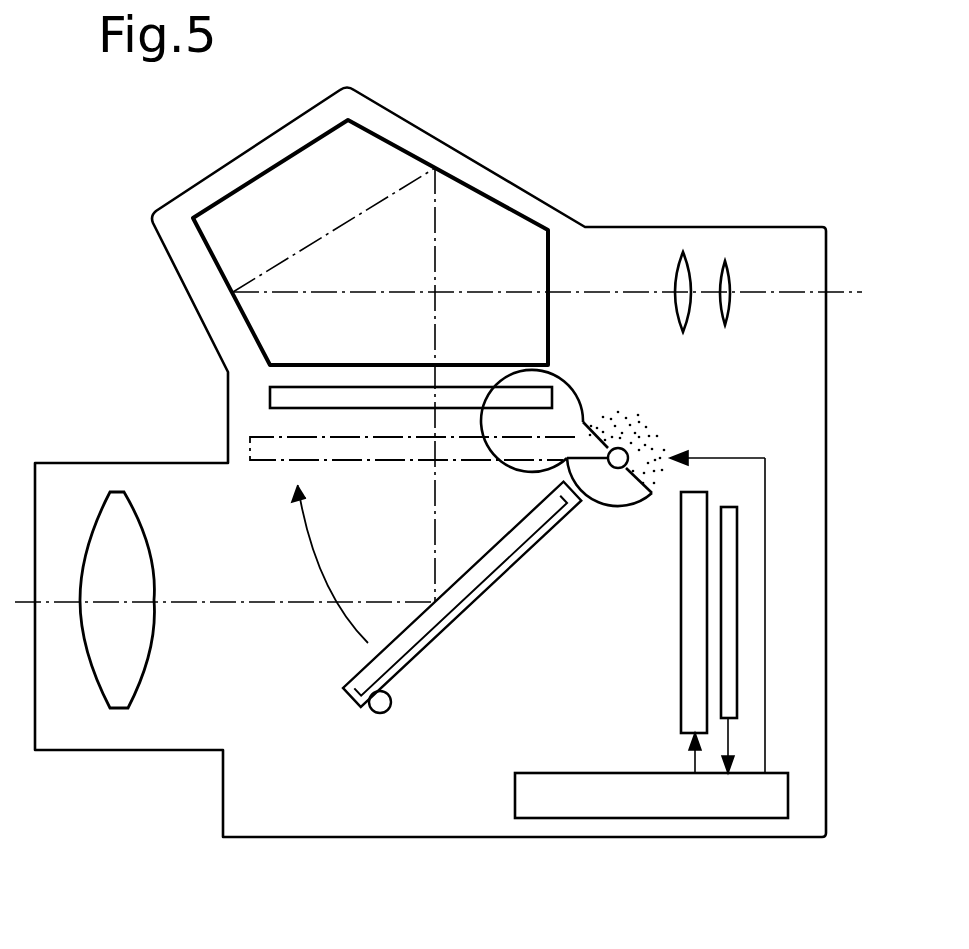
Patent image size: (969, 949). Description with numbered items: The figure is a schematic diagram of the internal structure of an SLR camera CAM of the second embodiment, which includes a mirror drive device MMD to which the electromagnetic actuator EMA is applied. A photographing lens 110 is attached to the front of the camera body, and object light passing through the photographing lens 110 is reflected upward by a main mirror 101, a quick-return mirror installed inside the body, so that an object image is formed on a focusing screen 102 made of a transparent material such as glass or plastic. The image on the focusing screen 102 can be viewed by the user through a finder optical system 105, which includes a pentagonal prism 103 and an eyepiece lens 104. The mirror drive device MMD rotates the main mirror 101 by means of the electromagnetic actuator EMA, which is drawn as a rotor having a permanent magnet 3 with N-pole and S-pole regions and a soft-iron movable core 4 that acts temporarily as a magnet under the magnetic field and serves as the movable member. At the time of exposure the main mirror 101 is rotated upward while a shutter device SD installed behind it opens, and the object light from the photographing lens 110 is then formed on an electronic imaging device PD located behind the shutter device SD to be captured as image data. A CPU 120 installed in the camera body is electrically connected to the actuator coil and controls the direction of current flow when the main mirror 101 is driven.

The permanent magnet 3 is at (620, 407).
The movable core 4 is at (620, 510).
The main mirror (quick-return mirror) 101 is at (435, 633).
The focusing screen 102 is at (270, 398).
The pentagonal prism 103 is at (395, 140).
The eyepiece lens 104 is at (735, 273).
The finder optical system 105 is at (667, 243).
The photographing lens 110 is at (140, 750).
The CPU 120 is at (662, 820).
The SLR camera CAM is at (522, 187).
The electromagnetic actuator EMA is at (691, 464).
The shutter device SD is at (692, 513).
The electronic imaging device PD is at (727, 645).
The mirror drive device MMD is at (427, 688).